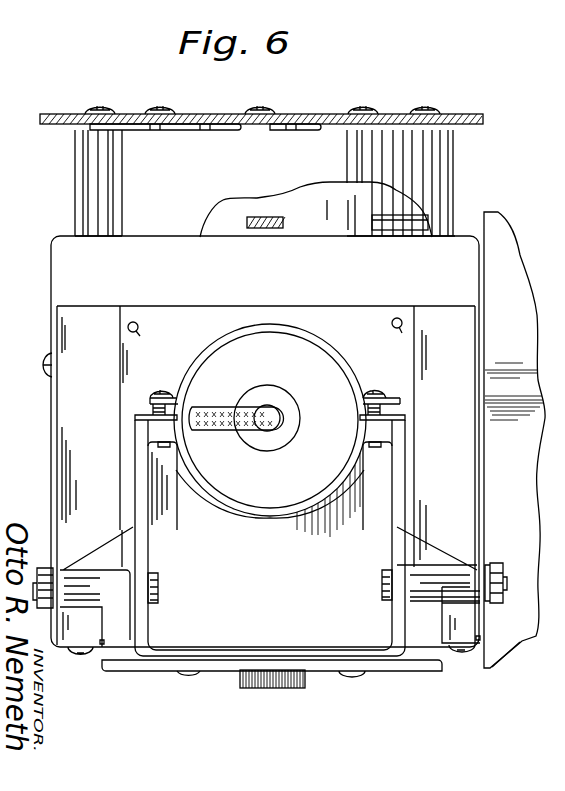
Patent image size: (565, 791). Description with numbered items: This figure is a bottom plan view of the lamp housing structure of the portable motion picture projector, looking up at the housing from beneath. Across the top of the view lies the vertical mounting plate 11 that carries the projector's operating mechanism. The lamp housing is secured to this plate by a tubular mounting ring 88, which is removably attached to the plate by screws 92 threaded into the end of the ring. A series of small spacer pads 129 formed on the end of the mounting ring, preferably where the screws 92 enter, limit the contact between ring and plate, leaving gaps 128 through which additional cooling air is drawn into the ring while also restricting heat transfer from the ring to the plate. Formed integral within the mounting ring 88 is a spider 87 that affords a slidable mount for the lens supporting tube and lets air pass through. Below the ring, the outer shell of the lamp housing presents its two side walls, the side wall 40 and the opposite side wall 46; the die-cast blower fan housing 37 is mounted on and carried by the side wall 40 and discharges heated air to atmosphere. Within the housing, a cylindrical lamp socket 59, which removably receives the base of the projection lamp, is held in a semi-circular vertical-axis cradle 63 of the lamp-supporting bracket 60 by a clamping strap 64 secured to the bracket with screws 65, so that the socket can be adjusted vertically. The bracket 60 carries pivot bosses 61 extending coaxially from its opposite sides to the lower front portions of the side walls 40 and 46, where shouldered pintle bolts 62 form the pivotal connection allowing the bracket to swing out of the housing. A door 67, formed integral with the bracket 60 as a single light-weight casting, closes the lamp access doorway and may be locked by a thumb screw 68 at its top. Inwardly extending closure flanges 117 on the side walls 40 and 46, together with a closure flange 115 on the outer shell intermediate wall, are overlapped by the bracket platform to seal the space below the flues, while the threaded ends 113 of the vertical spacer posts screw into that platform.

The mounting plate 11 is at (47, 114).
The spacer pads 129 is at (248, 124).
The gaps 128 is at (318, 126).
The screws 92 is at (368, 109).
The mounting ring 88 is at (436, 181).
The spider 87 is at (304, 198).
The side wall 46 is at (55, 410).
The closure flange 115 is at (160, 292).
The screw threaded ends 113 is at (401, 325).
The closure flanges 117 is at (80, 450).
The clamping strap 64 is at (311, 334).
The lamp socket 59 is at (323, 372).
The screws 65 is at (379, 390).
The bracket 60 is at (398, 488).
The cradle 63 is at (240, 503).
The pivot bosses 61 is at (464, 577).
The pintle bolts 62 is at (382, 595).
The door 67 is at (385, 670).
The thumb screw 68 is at (280, 686).
The side wall 40 is at (484, 482).
The fan housing 37 is at (512, 642).